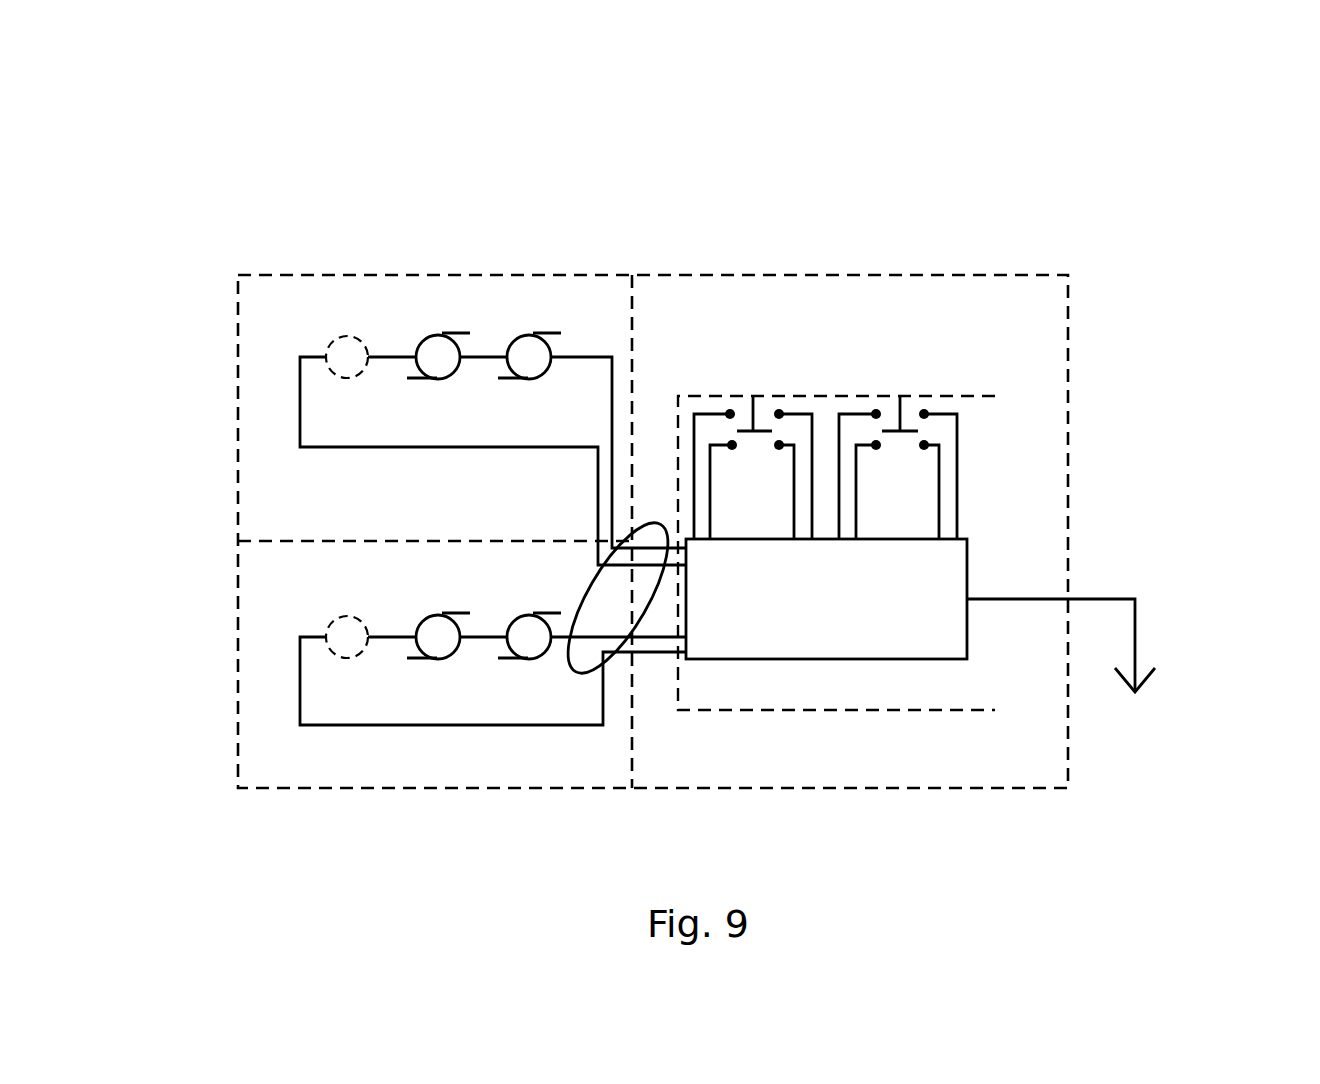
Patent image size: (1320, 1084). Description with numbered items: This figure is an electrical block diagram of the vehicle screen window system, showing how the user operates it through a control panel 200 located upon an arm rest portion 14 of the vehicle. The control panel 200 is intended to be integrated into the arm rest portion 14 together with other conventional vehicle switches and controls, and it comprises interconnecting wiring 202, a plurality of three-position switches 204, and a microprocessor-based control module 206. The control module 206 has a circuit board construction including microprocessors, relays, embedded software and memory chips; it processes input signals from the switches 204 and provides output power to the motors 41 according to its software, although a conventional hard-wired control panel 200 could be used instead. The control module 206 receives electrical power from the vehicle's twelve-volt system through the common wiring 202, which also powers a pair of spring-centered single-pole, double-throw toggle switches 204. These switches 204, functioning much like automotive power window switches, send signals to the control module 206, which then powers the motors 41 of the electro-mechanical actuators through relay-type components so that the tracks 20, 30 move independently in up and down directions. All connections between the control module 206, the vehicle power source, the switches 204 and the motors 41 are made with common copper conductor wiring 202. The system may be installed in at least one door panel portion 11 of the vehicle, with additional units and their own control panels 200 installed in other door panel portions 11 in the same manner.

The control panel 200 is at (1113, 188).
The door panel portion 11 is at (235, 494).
The arm rest portion 14 is at (1071, 541).
The track 20 is at (268, 326).
The track 30 is at (258, 706).
The motor 41 is at (528, 333).
The wiring 202 is at (587, 591).
The three-position switches 204 is at (893, 397).
The control module 206 is at (838, 630).